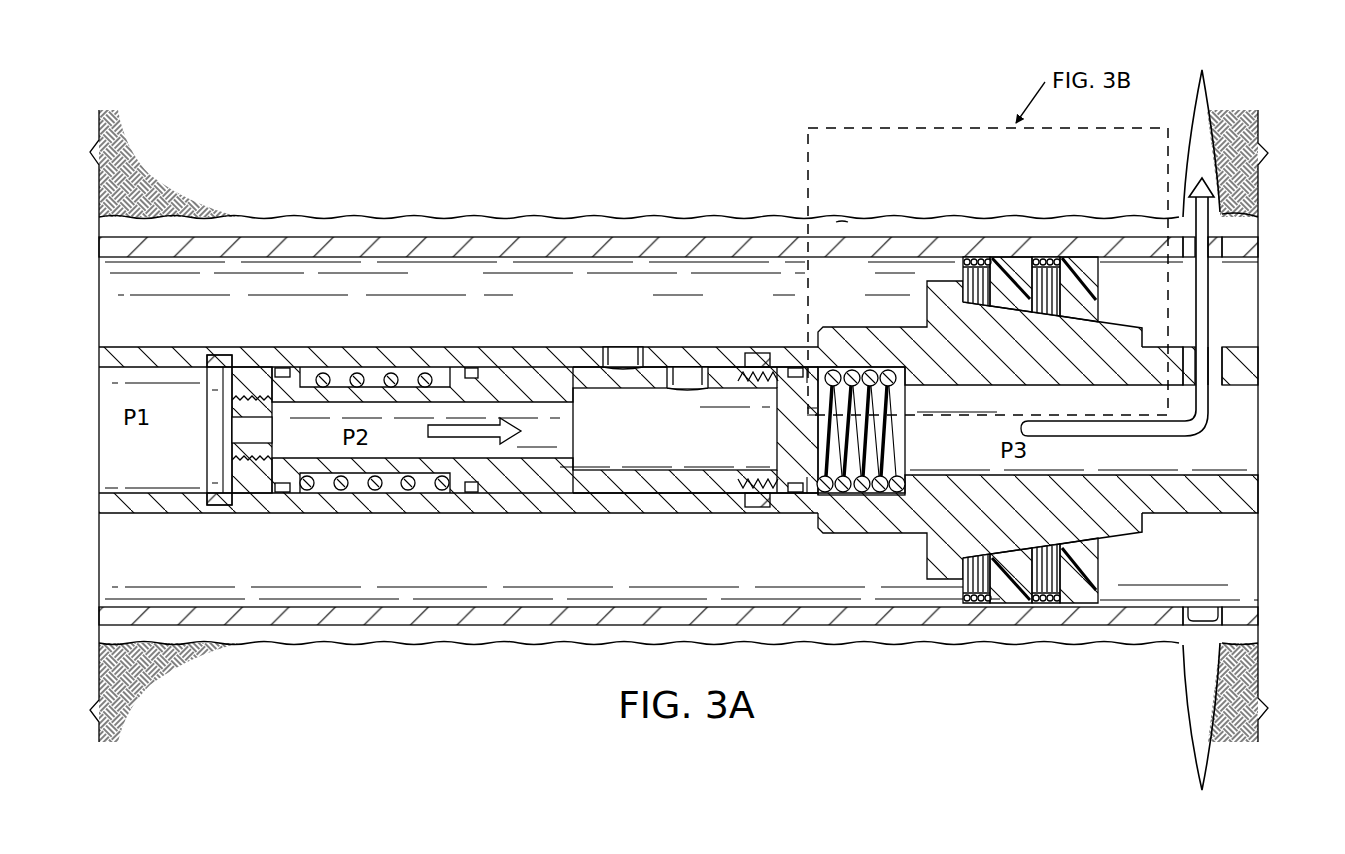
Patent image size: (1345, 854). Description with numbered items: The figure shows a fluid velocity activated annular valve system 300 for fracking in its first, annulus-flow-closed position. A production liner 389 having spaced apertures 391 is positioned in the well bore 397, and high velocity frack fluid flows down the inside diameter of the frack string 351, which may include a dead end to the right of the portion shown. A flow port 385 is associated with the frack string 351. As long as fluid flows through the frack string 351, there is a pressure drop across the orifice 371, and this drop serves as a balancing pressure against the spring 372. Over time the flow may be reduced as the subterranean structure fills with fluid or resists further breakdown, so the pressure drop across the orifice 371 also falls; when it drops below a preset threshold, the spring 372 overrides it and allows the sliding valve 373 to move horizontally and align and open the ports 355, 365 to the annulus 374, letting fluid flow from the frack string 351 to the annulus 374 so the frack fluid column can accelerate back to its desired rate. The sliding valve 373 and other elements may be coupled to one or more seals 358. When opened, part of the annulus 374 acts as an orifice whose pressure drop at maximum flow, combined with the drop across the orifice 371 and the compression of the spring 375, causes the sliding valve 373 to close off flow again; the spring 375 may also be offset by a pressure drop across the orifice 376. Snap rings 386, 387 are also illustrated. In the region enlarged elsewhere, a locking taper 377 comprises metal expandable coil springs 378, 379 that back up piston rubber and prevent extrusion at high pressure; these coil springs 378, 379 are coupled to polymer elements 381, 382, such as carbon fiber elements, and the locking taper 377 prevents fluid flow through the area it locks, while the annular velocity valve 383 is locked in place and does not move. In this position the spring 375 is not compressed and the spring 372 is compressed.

The downhole tool system 300 is at (352, 76).
The frack string 351 is at (330, 354).
The port 355 is at (624, 350).
The seal 358 is at (471, 366).
The port 365 is at (692, 387).
The orifice 371 is at (793, 440).
The spring 372 is at (893, 450).
The sliding valve 373 is at (541, 376).
The annulus 374 is at (468, 262).
The spring 375 is at (388, 373).
The orifice 376 is at (240, 430).
The locking taper 377 is at (1128, 326).
The coil spring 378 is at (978, 256).
The coil spring 379 is at (1047, 256).
The polymer element 381 is at (1083, 270).
The polymer element 382 is at (1008, 270).
The annular velocity valve 383 is at (851, 320).
The flow port 385 is at (1213, 354).
The snap ring 386 is at (756, 352).
The snap ring 387 is at (222, 355).
The production liner 389 is at (725, 232).
The aperture 391 is at (1217, 262).
The well bore 397 is at (836, 226).